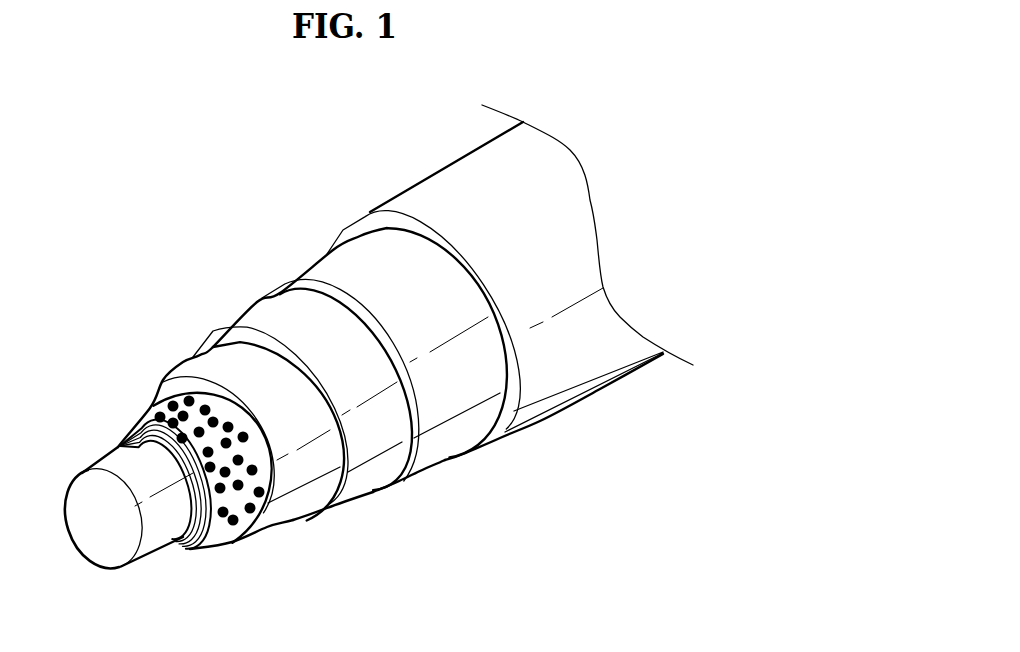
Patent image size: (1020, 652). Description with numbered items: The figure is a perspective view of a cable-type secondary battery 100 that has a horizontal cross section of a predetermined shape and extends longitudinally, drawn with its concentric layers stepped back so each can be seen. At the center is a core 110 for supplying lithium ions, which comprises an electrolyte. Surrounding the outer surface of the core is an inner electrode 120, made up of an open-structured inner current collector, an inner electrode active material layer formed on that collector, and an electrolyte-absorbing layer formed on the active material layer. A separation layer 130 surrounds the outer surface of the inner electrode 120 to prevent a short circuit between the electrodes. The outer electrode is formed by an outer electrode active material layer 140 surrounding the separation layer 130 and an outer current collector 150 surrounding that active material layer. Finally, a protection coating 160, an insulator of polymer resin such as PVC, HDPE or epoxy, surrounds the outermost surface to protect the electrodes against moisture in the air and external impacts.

The cable-type secondary battery 100 is at (210, 226).
The core for supplying lithium ions 110 is at (155, 543).
The inner electrode 120 is at (223, 533).
The separation layer 130 is at (290, 493).
The outer electrode active material layer 140 is at (365, 478).
The outer current collector 150 is at (440, 447).
The protection coating 160 is at (545, 402).